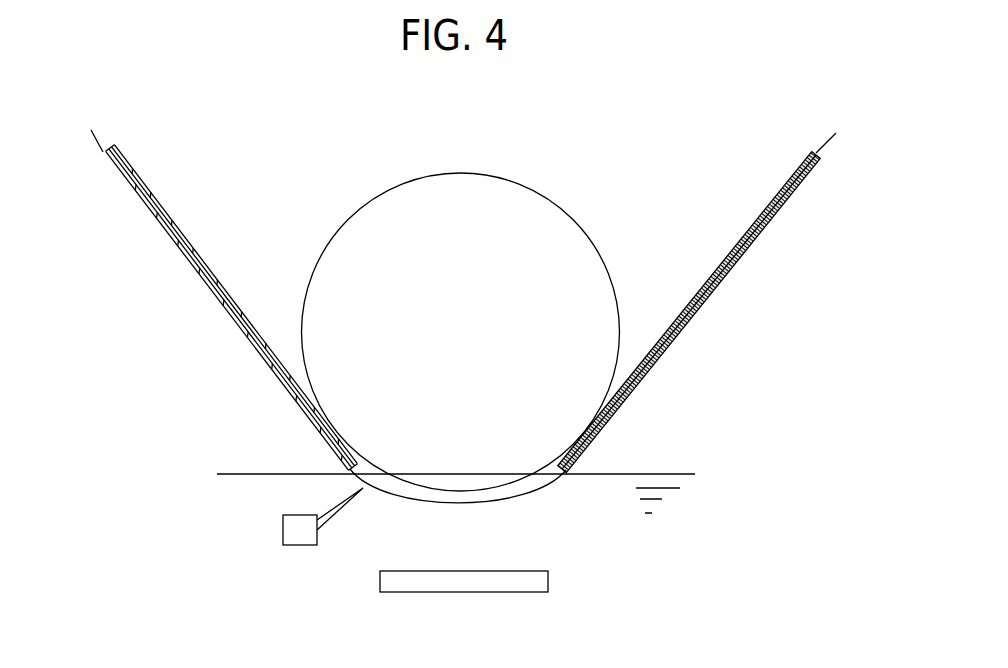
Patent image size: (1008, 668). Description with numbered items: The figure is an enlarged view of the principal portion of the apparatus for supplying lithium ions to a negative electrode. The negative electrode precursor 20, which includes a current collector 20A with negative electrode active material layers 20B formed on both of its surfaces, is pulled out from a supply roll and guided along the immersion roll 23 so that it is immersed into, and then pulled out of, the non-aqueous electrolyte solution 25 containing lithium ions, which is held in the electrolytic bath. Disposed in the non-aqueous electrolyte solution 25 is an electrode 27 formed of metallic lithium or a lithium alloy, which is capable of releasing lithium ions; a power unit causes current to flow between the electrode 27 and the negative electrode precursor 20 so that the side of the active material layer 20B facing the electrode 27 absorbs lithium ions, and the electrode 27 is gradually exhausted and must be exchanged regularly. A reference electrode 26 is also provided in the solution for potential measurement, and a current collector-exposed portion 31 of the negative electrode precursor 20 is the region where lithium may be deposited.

The negative electrode precursor 20 is at (463, 284).
The current collector 20A is at (160, 209).
The negative electrode active material layer 20B is at (140, 177).
The immersion roll 23 is at (515, 187).
The non-aqueous electrolyte solution 25 is at (660, 477).
The reference electrode 26 is at (283, 515).
The electrode 27 is at (548, 587).
The current collector-exposed portion 31 is at (498, 502).